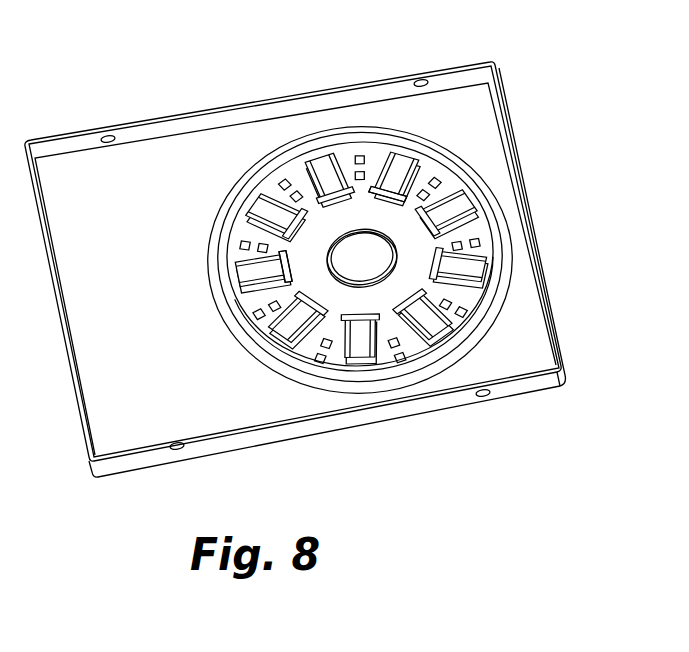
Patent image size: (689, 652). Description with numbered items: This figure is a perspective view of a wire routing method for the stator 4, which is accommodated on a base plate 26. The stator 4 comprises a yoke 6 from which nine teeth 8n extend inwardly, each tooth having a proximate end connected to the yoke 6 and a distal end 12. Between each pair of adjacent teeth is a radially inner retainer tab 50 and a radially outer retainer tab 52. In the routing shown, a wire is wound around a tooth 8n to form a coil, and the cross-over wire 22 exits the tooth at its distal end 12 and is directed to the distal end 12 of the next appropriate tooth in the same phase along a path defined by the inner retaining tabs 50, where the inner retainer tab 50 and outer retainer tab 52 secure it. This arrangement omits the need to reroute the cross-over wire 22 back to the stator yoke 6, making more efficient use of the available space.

The base plate 26 is at (147, 229).
The yoke 6 is at (247, 310).
The stator 4 is at (321, 262).
The inner retainer tab 50 is at (358, 182).
The outer retainer tab 52 is at (275, 175).
The tooth 8n is at (398, 163).
The cross-over wire 22 is at (302, 205).
The distal end 12 is at (388, 205).